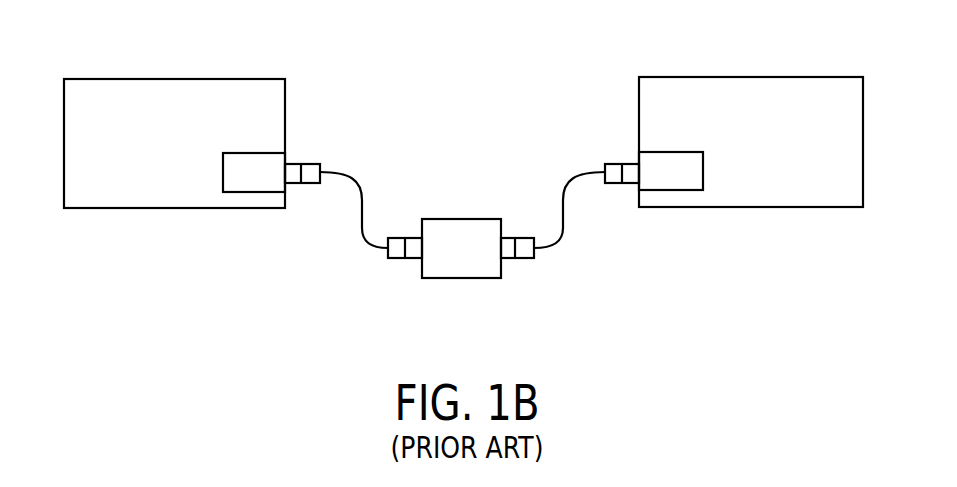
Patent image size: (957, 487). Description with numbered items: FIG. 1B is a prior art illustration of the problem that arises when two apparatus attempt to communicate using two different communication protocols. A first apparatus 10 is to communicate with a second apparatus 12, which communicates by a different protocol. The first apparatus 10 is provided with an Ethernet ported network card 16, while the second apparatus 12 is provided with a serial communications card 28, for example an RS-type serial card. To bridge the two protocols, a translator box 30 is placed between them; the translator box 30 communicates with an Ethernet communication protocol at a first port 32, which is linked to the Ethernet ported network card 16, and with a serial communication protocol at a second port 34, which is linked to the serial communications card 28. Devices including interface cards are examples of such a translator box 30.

The first apparatus 10 is at (254, 88).
The second apparatus 12 is at (665, 87).
The Ethernet ported network card 16 is at (248, 183).
The serial communications card 28 is at (675, 183).
The translator box 30 is at (473, 262).
The first port 32 is at (417, 245).
The second port 34 is at (508, 250).